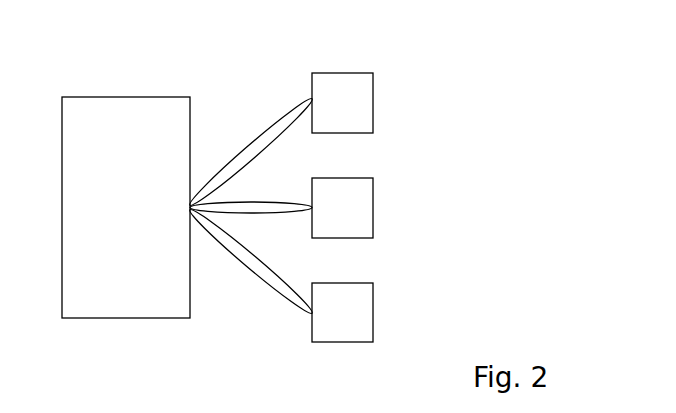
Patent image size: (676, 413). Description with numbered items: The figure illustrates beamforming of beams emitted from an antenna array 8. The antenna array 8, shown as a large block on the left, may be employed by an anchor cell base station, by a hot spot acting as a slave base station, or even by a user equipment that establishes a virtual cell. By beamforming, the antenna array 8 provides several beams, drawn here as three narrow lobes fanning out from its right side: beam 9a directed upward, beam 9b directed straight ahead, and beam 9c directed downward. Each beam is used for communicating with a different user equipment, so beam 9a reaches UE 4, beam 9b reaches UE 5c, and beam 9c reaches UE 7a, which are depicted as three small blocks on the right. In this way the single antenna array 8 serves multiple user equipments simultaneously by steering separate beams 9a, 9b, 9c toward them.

The antenna array 8 is at (128, 97).
The UE 4 is at (373, 73).
The UE 5c is at (373, 178).
The UE 7a is at (373, 283).
The beam 9a is at (266, 116).
The beam 9b is at (265, 212).
The beam 9c is at (270, 300).